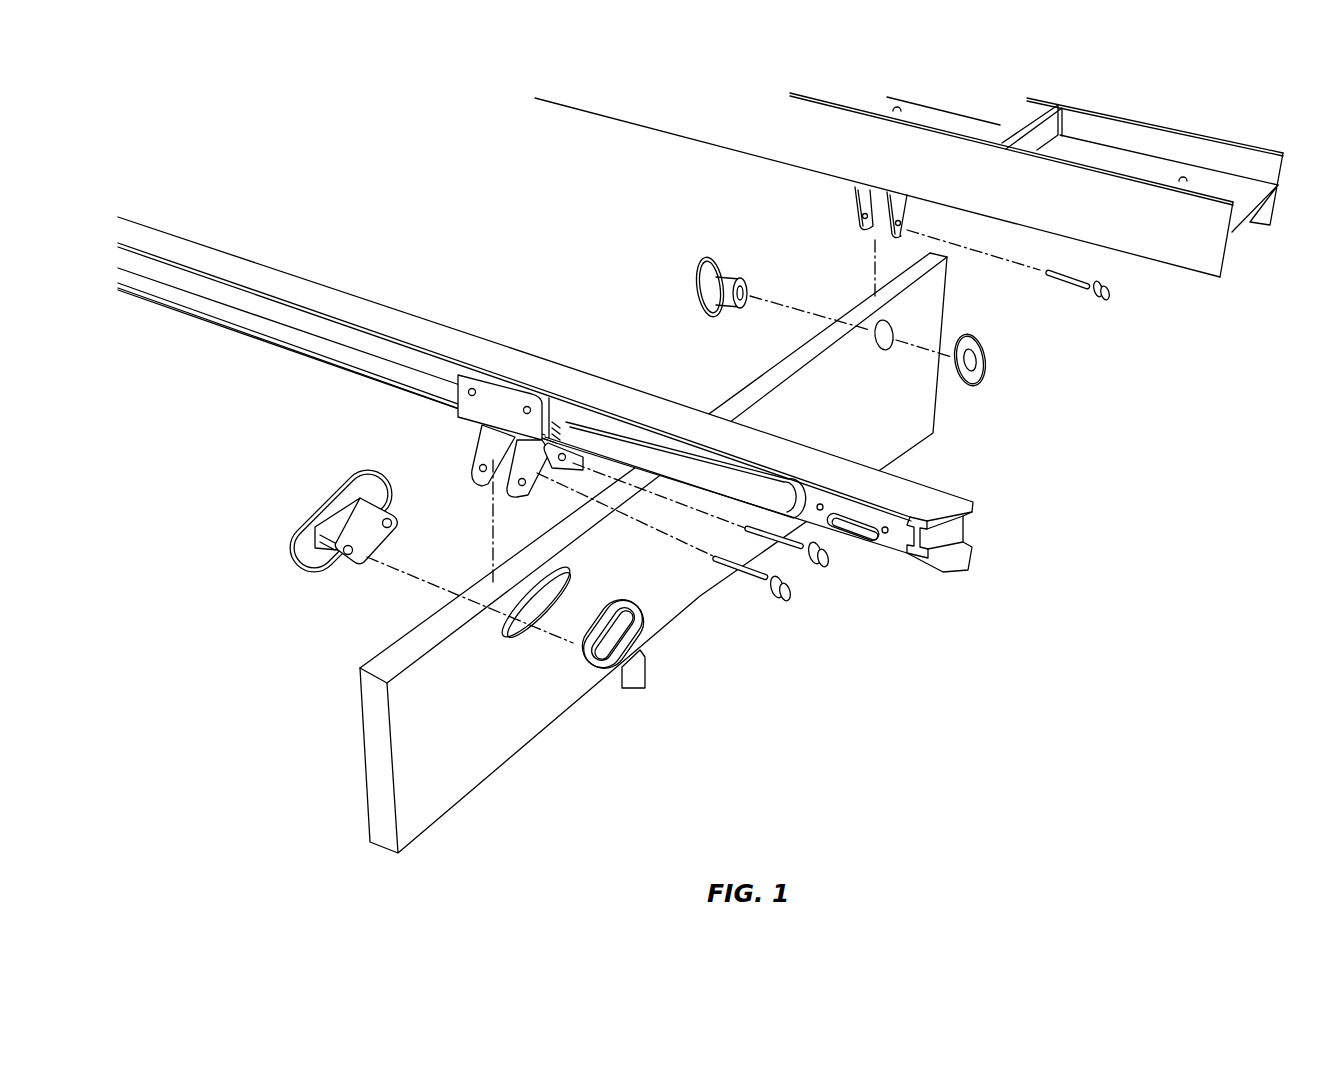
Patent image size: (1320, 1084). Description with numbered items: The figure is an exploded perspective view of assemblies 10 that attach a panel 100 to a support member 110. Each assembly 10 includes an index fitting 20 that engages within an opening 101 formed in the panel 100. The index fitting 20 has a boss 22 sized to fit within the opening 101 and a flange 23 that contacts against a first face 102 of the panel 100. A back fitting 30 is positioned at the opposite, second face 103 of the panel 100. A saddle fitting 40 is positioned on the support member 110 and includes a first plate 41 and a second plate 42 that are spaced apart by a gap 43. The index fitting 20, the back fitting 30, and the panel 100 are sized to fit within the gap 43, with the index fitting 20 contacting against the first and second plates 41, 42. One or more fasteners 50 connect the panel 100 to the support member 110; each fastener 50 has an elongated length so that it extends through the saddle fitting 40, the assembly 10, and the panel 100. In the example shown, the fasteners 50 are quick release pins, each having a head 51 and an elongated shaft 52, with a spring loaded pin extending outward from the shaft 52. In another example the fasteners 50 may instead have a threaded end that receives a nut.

The assembly 10 is at (490, 433).
The index fitting 20 is at (503, 433).
The boss 22 is at (367, 515).
The flange 23 is at (353, 483).
The back fitting 30 is at (643, 638).
The saddle fitting 40 is at (685, 335).
The first plate 41 is at (858, 200).
The second plate 42 is at (908, 208).
The gap 43 is at (492, 488).
The fastener 50 is at (941, 471).
The head 51 is at (818, 570).
The shaft 52 is at (733, 612).
The panel 100 is at (635, 554).
The opening 101 is at (504, 638).
The first face 102 is at (364, 789).
The second face 103 is at (427, 803).
The support member 110 is at (912, 493).